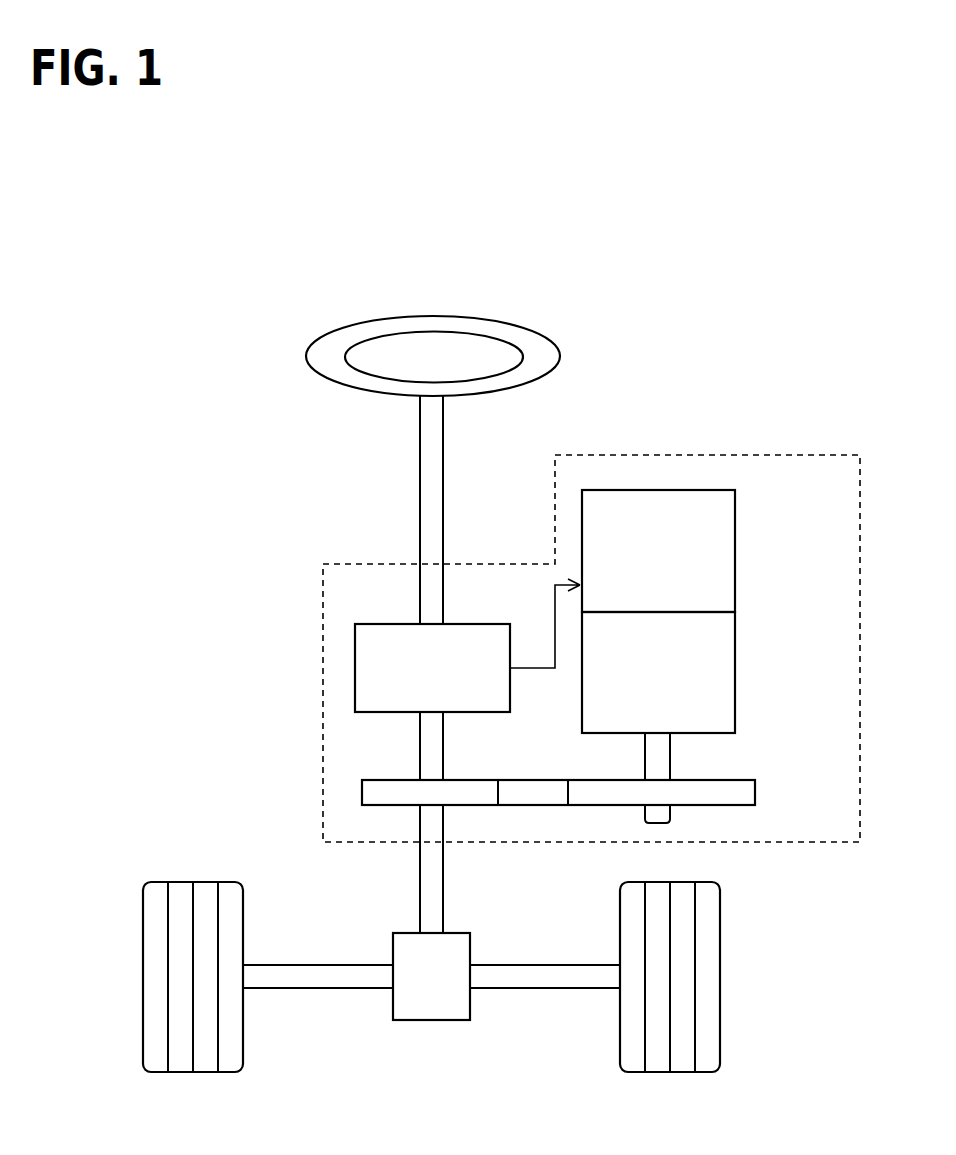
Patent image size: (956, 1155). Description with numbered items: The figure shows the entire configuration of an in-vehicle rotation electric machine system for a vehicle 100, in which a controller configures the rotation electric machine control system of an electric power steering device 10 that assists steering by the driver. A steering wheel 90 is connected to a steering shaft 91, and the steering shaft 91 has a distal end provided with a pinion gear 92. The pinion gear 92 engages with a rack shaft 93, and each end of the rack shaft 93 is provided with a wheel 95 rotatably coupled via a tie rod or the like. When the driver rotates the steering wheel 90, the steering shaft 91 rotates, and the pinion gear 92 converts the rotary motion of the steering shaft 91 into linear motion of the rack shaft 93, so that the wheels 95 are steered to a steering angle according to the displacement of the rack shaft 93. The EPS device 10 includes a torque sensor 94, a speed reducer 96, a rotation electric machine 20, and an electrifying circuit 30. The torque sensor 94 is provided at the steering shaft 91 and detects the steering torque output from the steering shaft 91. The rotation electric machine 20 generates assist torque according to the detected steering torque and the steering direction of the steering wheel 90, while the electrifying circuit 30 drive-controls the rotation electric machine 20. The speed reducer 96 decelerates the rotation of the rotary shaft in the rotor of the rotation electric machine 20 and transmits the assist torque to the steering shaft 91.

The vehicle 100 is at (804, 358).
The electric power steering (EPS) device 10 is at (861, 493).
The steering wheel 90 is at (306, 357).
The steering shaft 91 is at (419, 510).
The torque sensor 94 is at (470, 623).
The electrifying circuit 30 is at (736, 554).
The rotation electric machine 20 is at (736, 668).
The speed reducer 96 is at (756, 793).
The pinion gear 92 is at (471, 943).
The rack shaft 93 is at (348, 990).
The wheel 95 is at (142, 937).